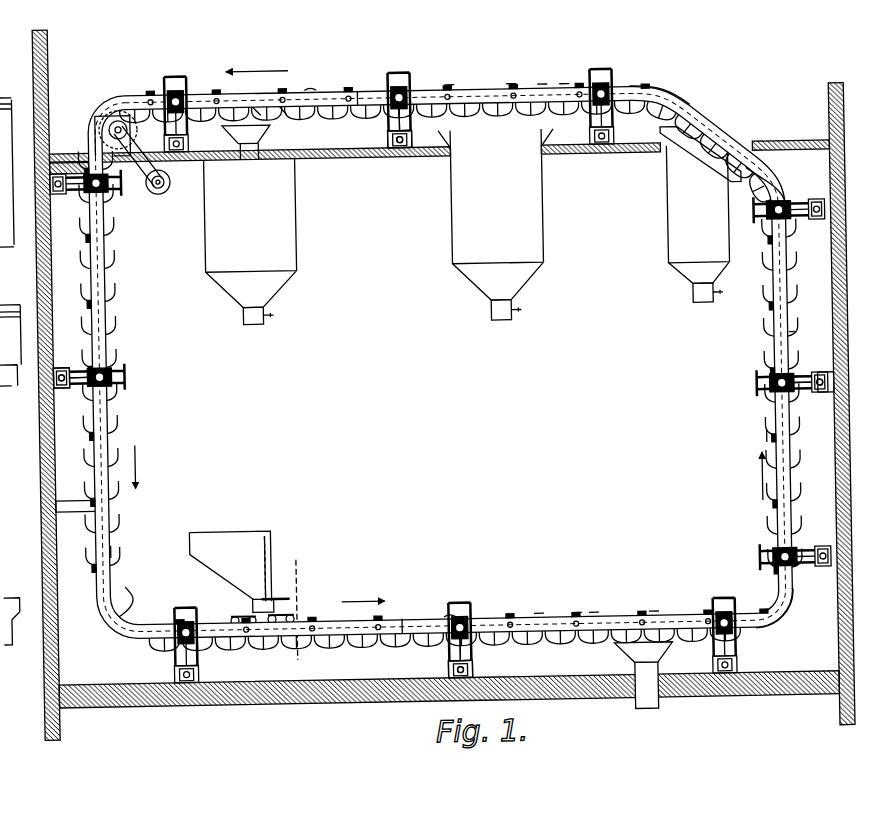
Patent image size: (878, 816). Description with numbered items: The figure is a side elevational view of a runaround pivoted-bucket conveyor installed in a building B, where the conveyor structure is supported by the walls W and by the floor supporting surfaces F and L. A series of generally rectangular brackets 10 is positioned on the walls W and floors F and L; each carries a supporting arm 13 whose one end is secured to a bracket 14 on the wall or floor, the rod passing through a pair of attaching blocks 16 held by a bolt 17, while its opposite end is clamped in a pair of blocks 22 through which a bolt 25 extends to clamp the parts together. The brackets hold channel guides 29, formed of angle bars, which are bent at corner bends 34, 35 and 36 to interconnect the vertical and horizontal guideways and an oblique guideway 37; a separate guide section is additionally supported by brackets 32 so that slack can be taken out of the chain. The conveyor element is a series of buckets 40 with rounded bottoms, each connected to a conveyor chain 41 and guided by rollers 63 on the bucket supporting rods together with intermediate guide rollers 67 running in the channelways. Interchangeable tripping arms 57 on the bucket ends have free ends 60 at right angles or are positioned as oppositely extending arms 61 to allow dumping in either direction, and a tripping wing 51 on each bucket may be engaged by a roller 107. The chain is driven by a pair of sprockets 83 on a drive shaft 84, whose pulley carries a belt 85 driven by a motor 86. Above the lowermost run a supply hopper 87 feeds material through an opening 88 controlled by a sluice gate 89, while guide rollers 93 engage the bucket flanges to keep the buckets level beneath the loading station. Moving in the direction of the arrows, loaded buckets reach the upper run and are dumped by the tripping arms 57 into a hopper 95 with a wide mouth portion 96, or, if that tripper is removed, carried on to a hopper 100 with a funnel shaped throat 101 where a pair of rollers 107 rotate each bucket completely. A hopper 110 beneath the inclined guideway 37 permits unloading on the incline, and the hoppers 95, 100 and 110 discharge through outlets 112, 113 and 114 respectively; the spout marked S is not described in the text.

The bracket 10 is at (182, 70).
The supporting arm 13 is at (416, 120).
The bracket 14 is at (428, 157).
The attaching blocks 16 is at (416, 140).
The bolt 17 is at (403, 150).
The blocks 22 is at (390, 102).
The bolt 25 is at (412, 95).
The channel guides 29 is at (430, 90).
The brackets 32 is at (76, 506).
The corner bend 34 is at (764, 602).
The corner bend 35 is at (790, 178).
The corner bend 36 is at (648, 92).
The oblique guideway 37 is at (720, 132).
The buckets 40 is at (288, 92).
The conveyor chain 41 is at (365, 104).
The tripping wing 51 is at (312, 88).
The tripping arms 57 is at (338, 88).
The free ends of tripping arms 60 is at (455, 87).
The oppositely extending arms 61 is at (650, 616).
The rollers 63 is at (568, 88).
The intermediate guide rollers 67 is at (548, 90).
The sprockets 83 is at (136, 122).
The drive shaft 84 is at (126, 104).
The belt 85 is at (138, 178).
The motor 86 is at (168, 189).
The supply hopper 87 is at (236, 532).
The opening 88 is at (272, 606).
The sluice gate 89 is at (288, 596).
The guide rollers 93 is at (231, 613).
The hopper 95 is at (535, 241).
The mouth portion 96 is at (505, 88).
The hopper 100 is at (295, 235).
The funnel shaped throat 101 is at (266, 136).
The roller 107 is at (262, 110).
The hopper 110 is at (671, 233).
The outlet 112 is at (503, 321).
The outlet 113 is at (256, 321).
The outlet 114 is at (704, 308).
The building B is at (850, 332).
The floor supporting surface F is at (356, 158).
The floor supporting surface L is at (333, 703).
The discharge spout S is at (642, 705).
The walls W is at (40, 447).